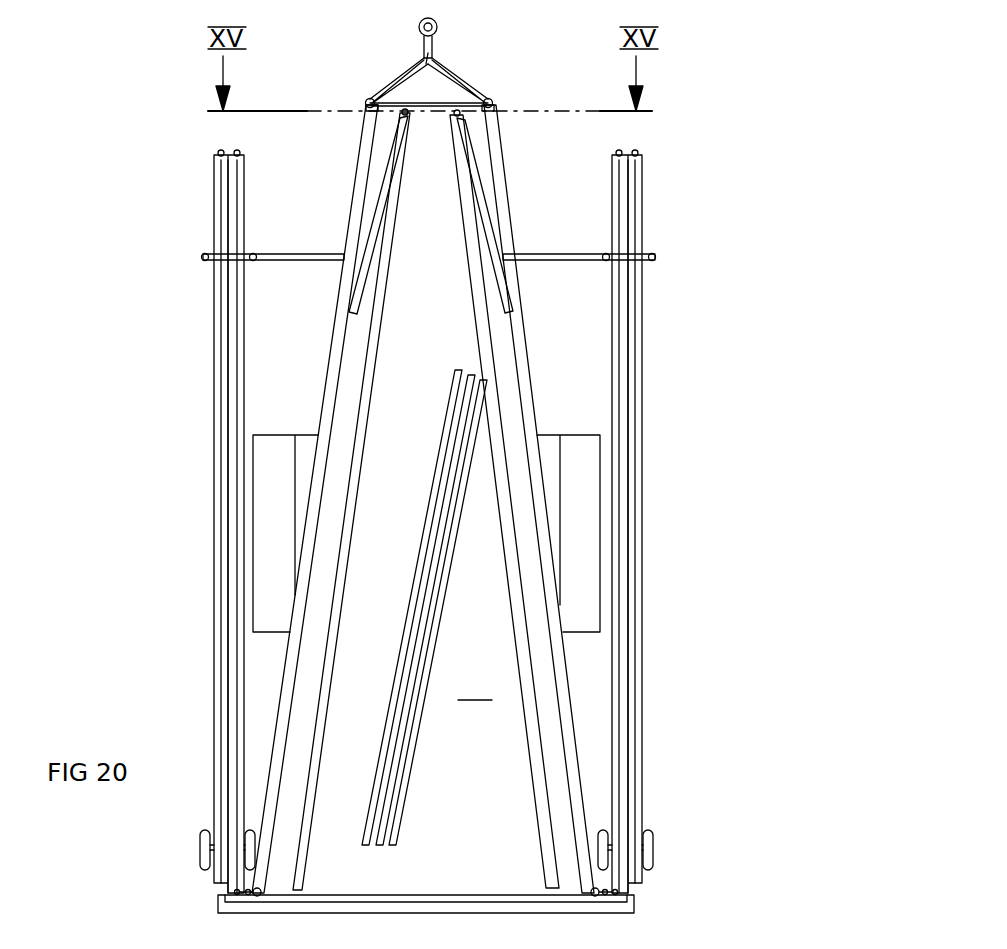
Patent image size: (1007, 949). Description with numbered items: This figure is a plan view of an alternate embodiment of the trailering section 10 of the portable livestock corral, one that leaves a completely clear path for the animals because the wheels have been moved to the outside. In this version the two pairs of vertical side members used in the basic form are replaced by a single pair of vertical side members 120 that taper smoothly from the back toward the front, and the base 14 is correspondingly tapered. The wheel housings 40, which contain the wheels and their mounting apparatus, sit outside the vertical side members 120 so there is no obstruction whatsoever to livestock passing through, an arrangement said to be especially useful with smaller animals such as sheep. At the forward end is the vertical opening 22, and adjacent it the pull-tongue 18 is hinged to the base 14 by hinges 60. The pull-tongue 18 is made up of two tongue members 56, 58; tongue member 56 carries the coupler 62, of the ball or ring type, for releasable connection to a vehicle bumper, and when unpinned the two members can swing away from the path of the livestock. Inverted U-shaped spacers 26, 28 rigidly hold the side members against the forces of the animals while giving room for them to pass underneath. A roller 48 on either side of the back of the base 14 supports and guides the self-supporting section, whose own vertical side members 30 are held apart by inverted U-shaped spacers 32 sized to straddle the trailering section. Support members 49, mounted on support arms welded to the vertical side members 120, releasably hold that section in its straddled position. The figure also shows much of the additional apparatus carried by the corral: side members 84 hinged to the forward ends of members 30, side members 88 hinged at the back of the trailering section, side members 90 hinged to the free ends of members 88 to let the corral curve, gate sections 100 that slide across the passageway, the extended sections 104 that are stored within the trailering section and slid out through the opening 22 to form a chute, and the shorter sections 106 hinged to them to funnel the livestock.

The trailering section 10 is at (668, 234).
The base 14 is at (477, 686).
The pull-tongue 18 is at (462, 68).
The vertical opening 22 is at (427, 94).
The spacer 26 is at (367, 103).
The spacer 28 is at (262, 892).
The vertical side members 30 is at (216, 688).
The inverted U-shaped spacers 32 is at (405, 908).
The wheel housing 40 is at (270, 470).
The roller 48 is at (200, 848).
The support members 49 is at (203, 257).
The tongue member 56 is at (410, 68).
The tongue member 58 is at (470, 78).
The hinges 60 is at (371, 99).
The coupler 62 is at (438, 24).
The side member 84 is at (221, 640).
The side member 88 is at (237, 590).
The side member 90 is at (228, 540).
The gate sections 100 is at (395, 805).
The extended sections 104 is at (392, 320).
The shorter sections 106 is at (375, 225).
The vertical side members 120 is at (334, 347).